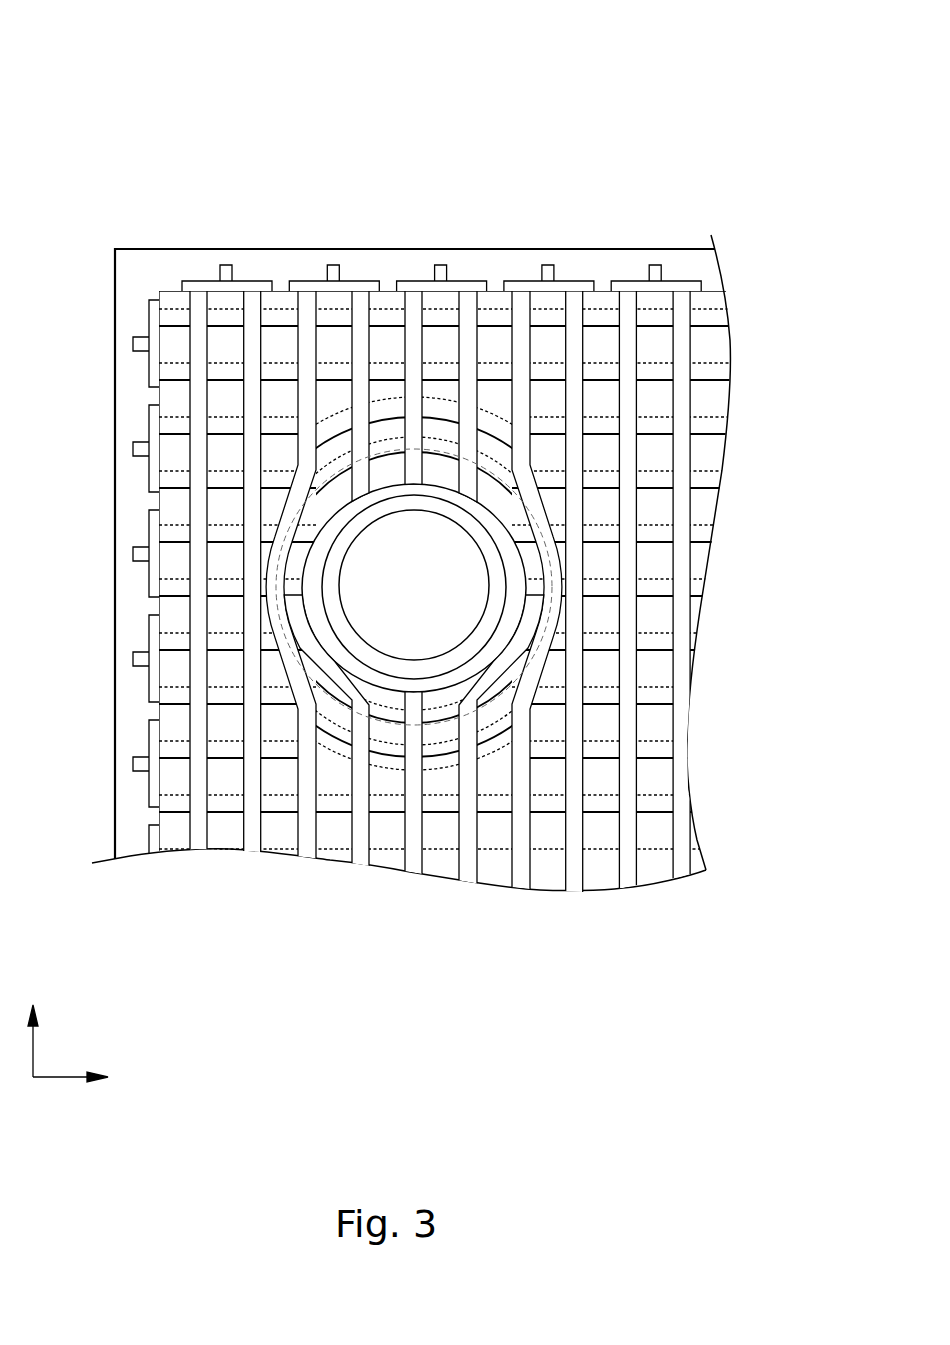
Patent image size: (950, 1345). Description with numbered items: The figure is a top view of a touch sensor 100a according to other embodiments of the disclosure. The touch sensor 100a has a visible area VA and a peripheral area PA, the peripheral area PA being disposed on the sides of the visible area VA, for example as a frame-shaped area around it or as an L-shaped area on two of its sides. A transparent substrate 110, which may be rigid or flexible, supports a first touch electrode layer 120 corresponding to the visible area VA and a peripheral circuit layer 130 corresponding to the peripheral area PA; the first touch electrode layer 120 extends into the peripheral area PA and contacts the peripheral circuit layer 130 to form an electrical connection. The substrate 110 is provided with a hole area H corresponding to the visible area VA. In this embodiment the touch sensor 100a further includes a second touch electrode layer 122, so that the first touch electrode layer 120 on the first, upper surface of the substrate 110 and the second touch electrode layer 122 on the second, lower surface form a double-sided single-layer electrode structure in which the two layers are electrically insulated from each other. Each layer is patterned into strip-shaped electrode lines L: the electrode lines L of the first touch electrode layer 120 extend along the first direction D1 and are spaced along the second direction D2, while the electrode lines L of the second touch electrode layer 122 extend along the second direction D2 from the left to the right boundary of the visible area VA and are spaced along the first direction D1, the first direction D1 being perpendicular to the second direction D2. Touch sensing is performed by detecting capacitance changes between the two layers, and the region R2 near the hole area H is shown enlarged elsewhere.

The touch sensor 100a is at (92, 32).
The peripheral area PA is at (147, 250).
The visible area VA is at (168, 397).
The substrate 110 is at (115, 327).
The peripheral circuit layer 130 is at (656, 266).
The first touch electrode layer 120 is at (752, 328).
The electrode line L is at (712, 352).
The second touch electrode layer 122 is at (752, 537).
The hole area H is at (425, 600).
The region R2 is at (548, 604).
The first direction D1 is at (33, 1027).
The second direction D2 is at (89, 1080).